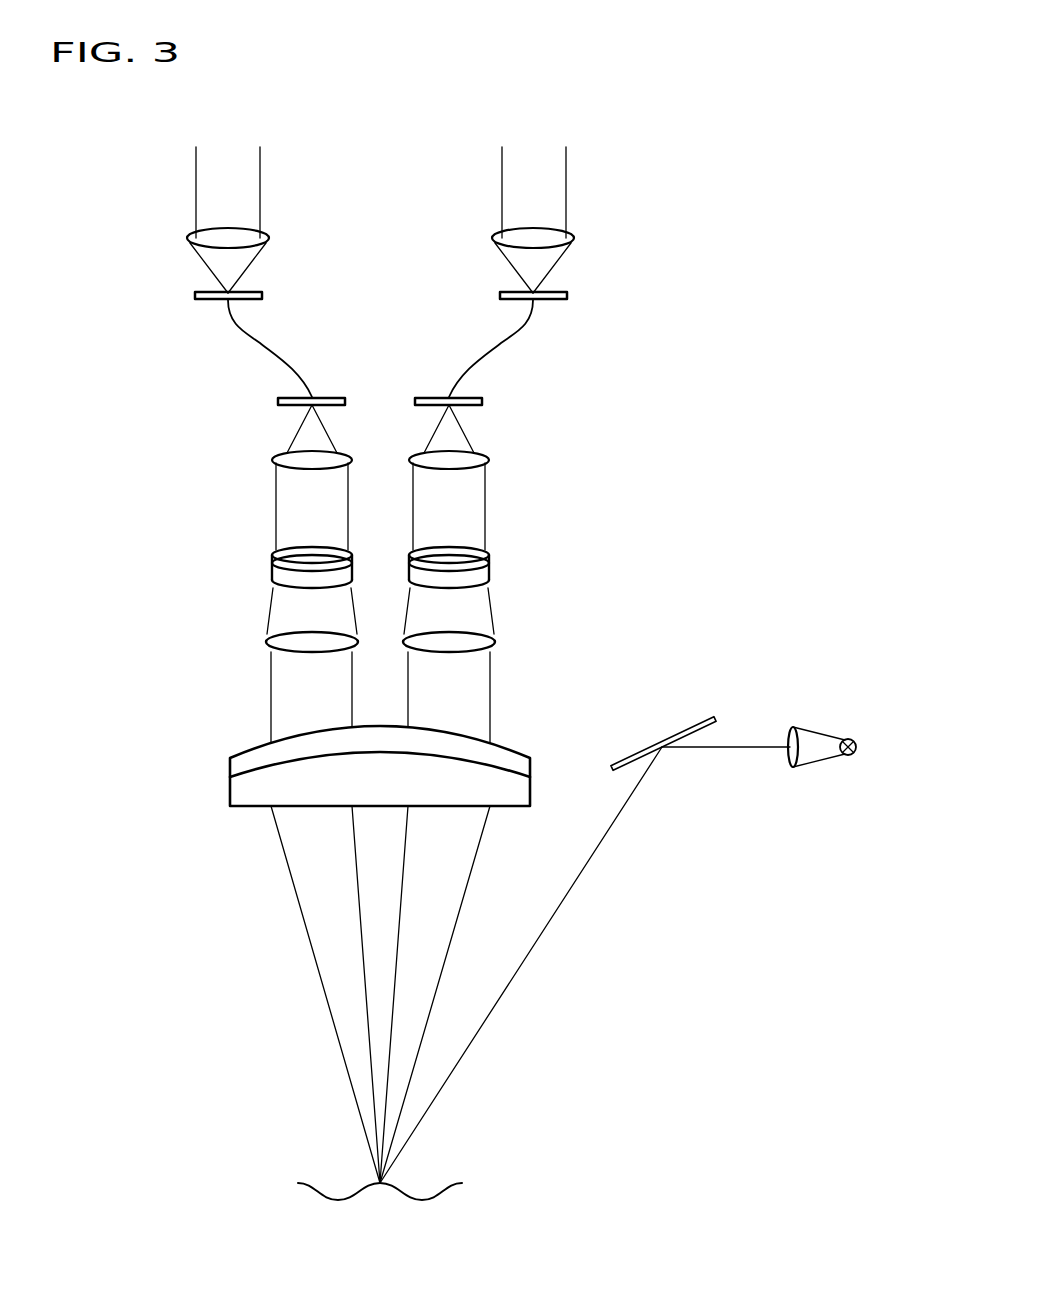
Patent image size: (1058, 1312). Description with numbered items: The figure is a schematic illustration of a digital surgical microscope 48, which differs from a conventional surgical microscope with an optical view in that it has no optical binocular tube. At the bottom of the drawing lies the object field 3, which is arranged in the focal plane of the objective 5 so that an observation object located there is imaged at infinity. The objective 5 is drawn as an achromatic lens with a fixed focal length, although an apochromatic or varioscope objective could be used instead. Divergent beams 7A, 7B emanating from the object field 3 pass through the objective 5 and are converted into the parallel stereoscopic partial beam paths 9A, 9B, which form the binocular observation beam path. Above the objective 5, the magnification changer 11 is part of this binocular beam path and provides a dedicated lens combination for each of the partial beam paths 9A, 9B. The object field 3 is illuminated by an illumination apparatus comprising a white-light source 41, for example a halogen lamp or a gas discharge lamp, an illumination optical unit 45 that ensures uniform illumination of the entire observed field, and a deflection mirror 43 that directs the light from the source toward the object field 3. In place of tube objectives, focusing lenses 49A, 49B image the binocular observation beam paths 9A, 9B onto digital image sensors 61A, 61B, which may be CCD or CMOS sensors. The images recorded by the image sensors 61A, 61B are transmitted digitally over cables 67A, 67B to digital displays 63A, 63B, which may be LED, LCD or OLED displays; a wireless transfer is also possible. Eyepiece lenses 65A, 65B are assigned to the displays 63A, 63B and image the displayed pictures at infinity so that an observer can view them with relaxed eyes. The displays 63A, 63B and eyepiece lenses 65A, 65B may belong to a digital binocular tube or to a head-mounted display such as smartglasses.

The object field 3 is at (395, 1178).
The objective 5 is at (210, 718).
The divergent beam 7A is at (309, 940).
The divergent beam 7B is at (473, 868).
The stereoscopic partial beam path 9A is at (271, 685).
The stereoscopic partial beam path 9B is at (490, 685).
The magnification changer 11 is at (233, 545).
The white-light source 41 is at (858, 742).
The deflection mirror 43 is at (680, 733).
The illumination optical unit 45 is at (830, 735).
The digital surgical microscope 48 is at (756, 338).
The focusing lens 49A is at (272, 460).
The focusing lens 49B is at (488, 460).
The digital image sensor 61A is at (278, 401).
The digital image sensor 61B is at (482, 401).
The digital display 63A is at (195, 296).
The digital display 63B is at (567, 296).
The eyepiece lens 65A is at (188, 238).
The eyepiece lens 65B is at (575, 238).
The cable 67A is at (258, 342).
The cable 67B is at (503, 342).